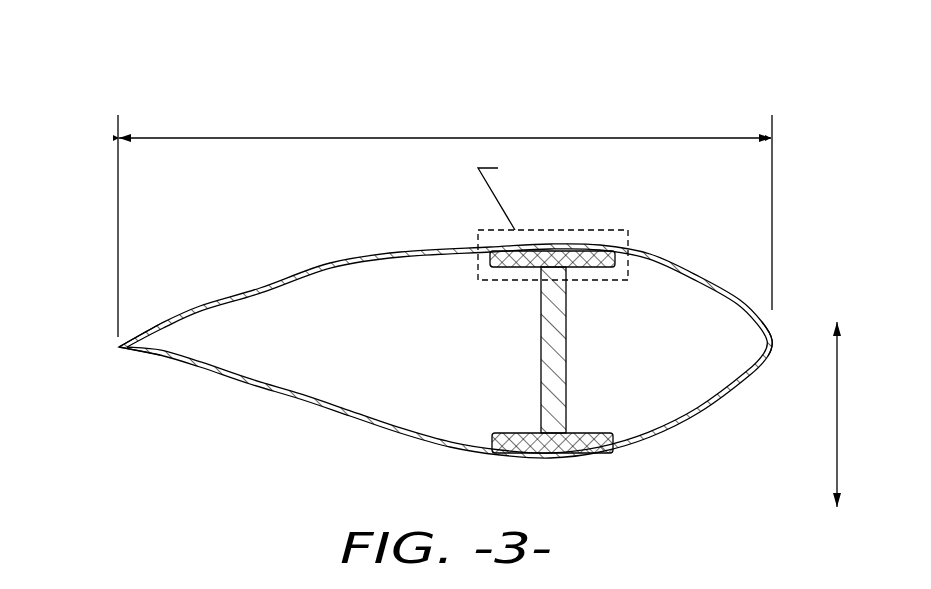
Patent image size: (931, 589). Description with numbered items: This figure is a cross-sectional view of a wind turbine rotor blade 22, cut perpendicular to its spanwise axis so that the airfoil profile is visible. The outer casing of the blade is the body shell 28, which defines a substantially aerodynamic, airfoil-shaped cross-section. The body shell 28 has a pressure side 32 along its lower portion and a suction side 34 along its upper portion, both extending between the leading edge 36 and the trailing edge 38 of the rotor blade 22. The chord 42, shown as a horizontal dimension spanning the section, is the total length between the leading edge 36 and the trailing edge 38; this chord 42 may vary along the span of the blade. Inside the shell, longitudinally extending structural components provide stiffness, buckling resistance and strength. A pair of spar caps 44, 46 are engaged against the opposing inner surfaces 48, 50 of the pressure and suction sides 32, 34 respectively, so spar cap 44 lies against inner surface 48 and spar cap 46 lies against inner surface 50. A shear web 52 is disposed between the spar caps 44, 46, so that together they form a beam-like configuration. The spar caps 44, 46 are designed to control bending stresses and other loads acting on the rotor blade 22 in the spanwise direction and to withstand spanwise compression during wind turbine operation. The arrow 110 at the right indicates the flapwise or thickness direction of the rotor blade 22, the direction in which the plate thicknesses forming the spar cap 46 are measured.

The rotor blade 22 is at (688, 94).
The body shell 28 is at (324, 262).
The pressure side 32 is at (383, 434).
The suction side 34 is at (424, 248).
The leading edge 36 is at (775, 338).
The trailing edge 38 is at (117, 346).
The chord 42 is at (288, 138).
The spar cap 44 is at (578, 440).
The spar cap 46 is at (577, 258).
The inner surface 48 is at (290, 390).
The inner surface 50 is at (358, 268).
The shear web 52 is at (567, 387).
The arrow indicating thickness direction 110 is at (837, 408).